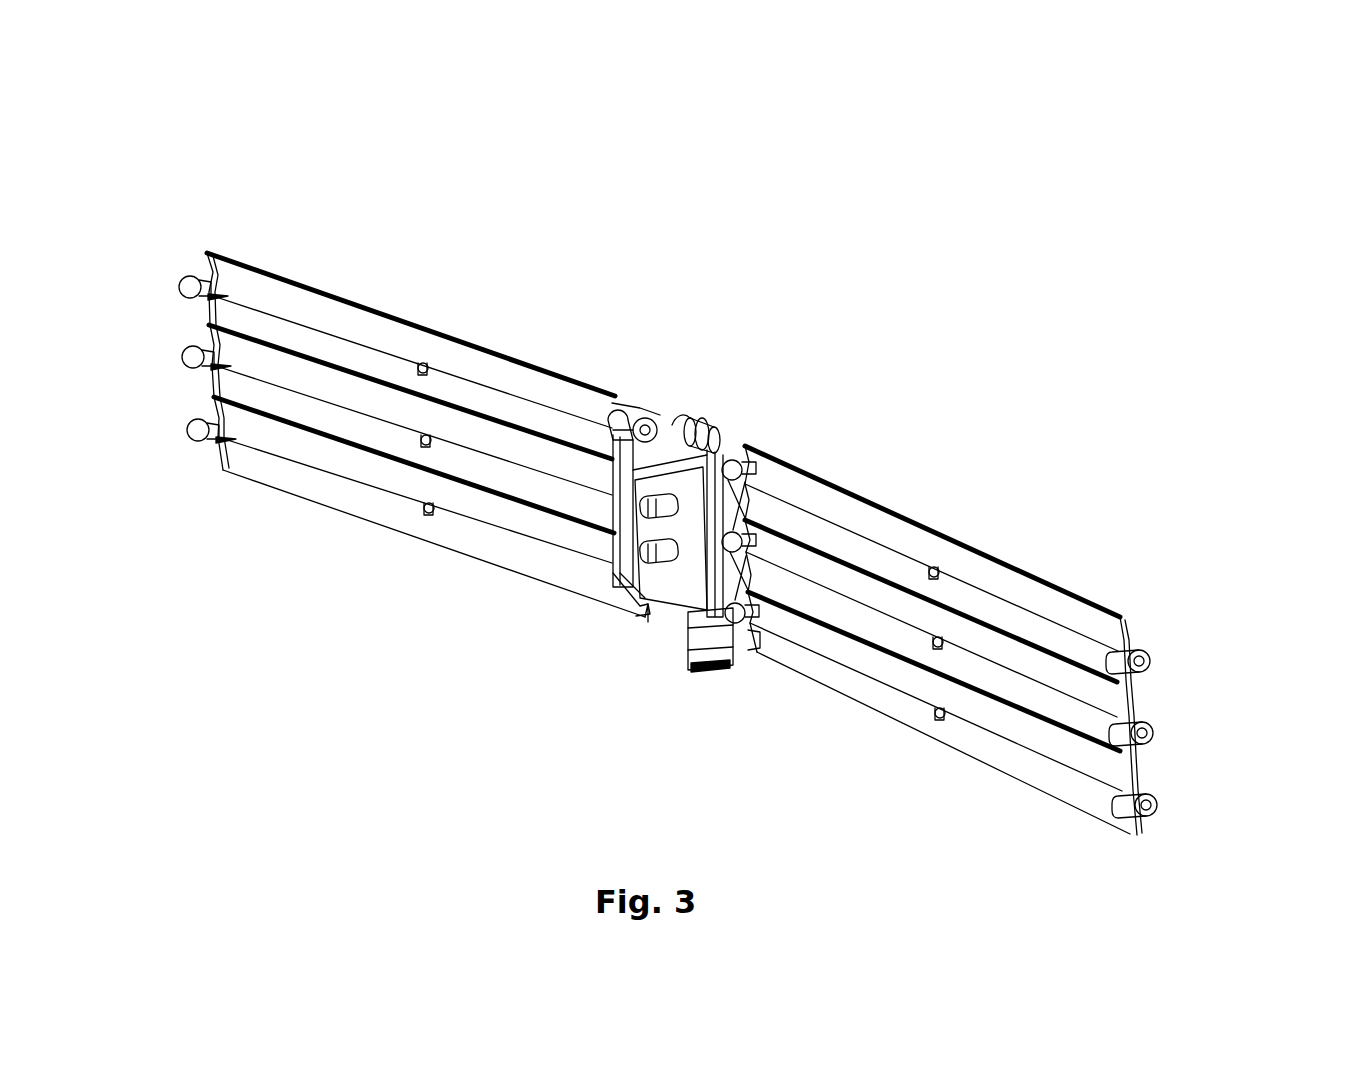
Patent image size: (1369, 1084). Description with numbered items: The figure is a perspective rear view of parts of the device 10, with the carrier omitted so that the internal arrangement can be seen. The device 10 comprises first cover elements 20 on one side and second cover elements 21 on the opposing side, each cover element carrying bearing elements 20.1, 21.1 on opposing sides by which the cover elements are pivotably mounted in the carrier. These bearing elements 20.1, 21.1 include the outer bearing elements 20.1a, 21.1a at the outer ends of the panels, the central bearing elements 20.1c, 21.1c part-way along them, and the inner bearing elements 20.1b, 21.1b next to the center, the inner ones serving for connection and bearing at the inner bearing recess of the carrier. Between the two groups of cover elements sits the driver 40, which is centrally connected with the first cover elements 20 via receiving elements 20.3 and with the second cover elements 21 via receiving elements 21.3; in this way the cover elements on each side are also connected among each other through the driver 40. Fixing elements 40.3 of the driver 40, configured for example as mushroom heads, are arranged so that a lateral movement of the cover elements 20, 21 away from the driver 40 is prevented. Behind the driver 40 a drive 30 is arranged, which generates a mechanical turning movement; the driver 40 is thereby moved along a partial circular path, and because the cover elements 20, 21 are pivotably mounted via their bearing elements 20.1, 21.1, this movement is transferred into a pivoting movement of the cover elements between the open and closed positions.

The device 10 is at (776, 249).
The first cover elements 20 is at (318, 447).
The bearing elements of the first cover elements 20.1 is at (410, 413).
The outer bearing element 20.1a is at (180, 288).
The inner bearing element 20.1b is at (606, 405).
The central bearing element 20.1c is at (432, 510).
The receiving elements 20.3 is at (645, 616).
The second cover elements 21 is at (1060, 750).
The bearing elements of the second cover elements 21.1 is at (1014, 567).
The outer bearing element 21.1a is at (1155, 810).
The inner bearing element 21.1b is at (725, 629).
The central bearing element 21.1c is at (943, 712).
The receiving elements 21.3 is at (757, 637).
The drive 30 is at (685, 418).
The driver 40 is at (683, 592).
The fixing elements 40.3 is at (742, 618).